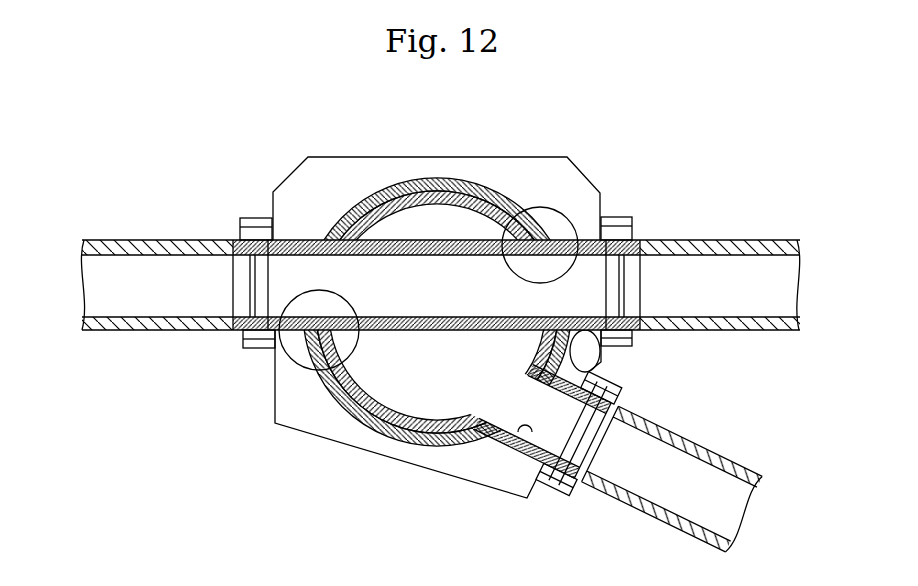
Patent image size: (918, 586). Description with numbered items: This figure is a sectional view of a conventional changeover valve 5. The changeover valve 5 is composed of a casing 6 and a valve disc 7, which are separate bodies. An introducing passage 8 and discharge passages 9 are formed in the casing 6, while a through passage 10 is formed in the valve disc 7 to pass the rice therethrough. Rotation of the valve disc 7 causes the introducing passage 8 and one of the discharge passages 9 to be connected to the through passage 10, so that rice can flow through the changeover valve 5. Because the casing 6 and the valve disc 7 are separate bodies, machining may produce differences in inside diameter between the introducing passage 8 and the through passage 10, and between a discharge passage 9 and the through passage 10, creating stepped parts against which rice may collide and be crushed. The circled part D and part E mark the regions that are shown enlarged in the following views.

The changeover valve 5 is at (268, 140).
The casing 6 is at (527, 175).
The valve disc 7 is at (378, 398).
The introducing passage 8 is at (308, 243).
The discharge passage 9 is at (597, 258).
The through passage 10 is at (440, 316).
The part D is at (303, 369).
The part E is at (560, 213).